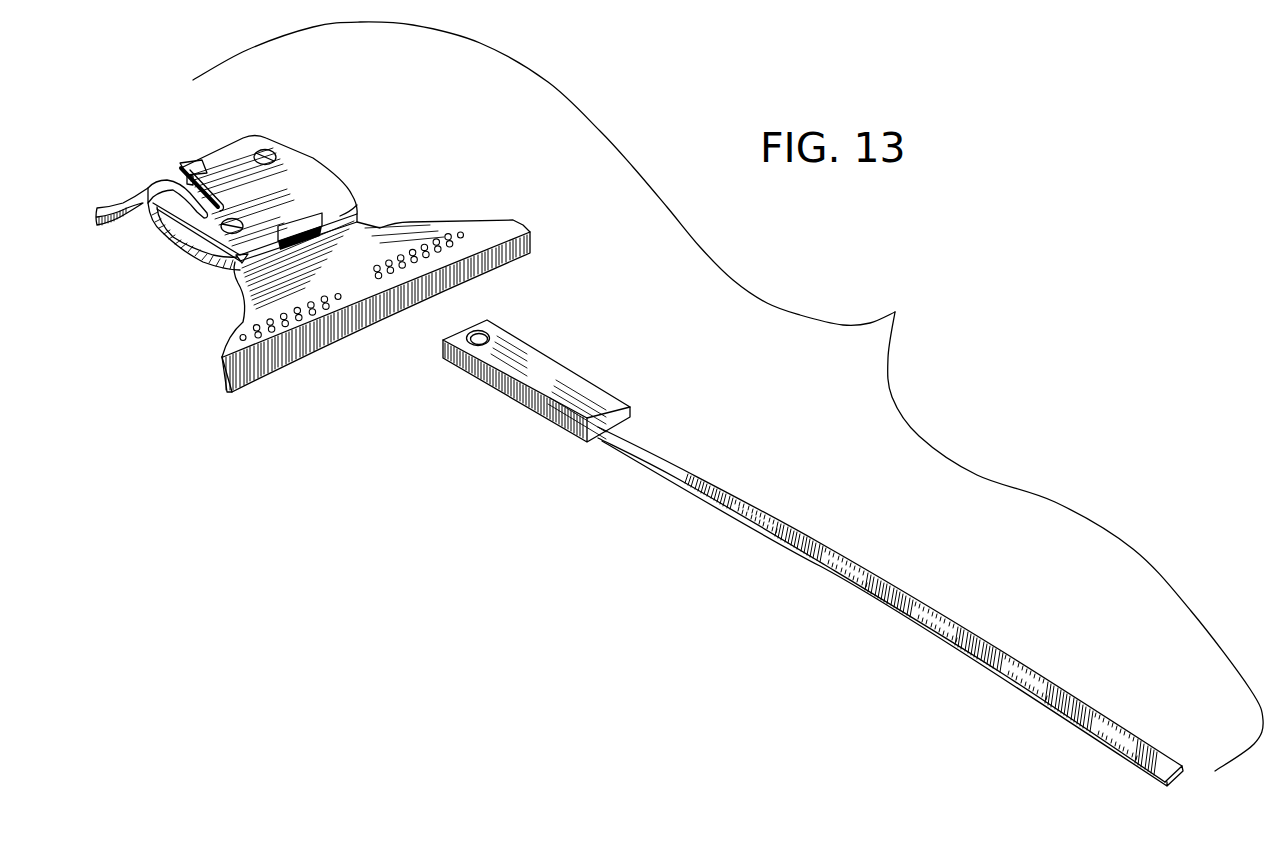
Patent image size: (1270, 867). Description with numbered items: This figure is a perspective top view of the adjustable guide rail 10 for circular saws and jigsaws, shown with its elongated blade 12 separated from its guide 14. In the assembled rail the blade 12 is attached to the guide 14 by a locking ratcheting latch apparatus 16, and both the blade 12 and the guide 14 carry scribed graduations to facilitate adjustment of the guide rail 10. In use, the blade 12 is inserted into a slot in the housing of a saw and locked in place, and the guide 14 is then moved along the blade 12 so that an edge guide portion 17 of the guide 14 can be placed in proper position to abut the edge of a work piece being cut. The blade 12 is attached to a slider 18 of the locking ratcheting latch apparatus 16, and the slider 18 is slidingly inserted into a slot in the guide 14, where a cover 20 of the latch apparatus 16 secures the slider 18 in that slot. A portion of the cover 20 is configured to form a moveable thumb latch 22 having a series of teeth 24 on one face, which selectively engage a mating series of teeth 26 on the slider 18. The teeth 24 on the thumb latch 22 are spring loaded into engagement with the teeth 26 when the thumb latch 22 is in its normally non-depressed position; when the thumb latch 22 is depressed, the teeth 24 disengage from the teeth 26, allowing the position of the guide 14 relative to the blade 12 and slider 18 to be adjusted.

The adjustable guide rail 10 is at (728, 396).
The elongated blade 12 is at (927, 607).
The guide 14 is at (311, 277).
The locking ratcheting latch apparatus 16 is at (174, 160).
The edge guide portion 17 is at (347, 328).
The slider 18 is at (534, 381).
The cover 20 is at (348, 183).
The thumb latch 22 is at (172, 178).
The teeth 24 is at (203, 158).
The teeth 26 is at (493, 383).